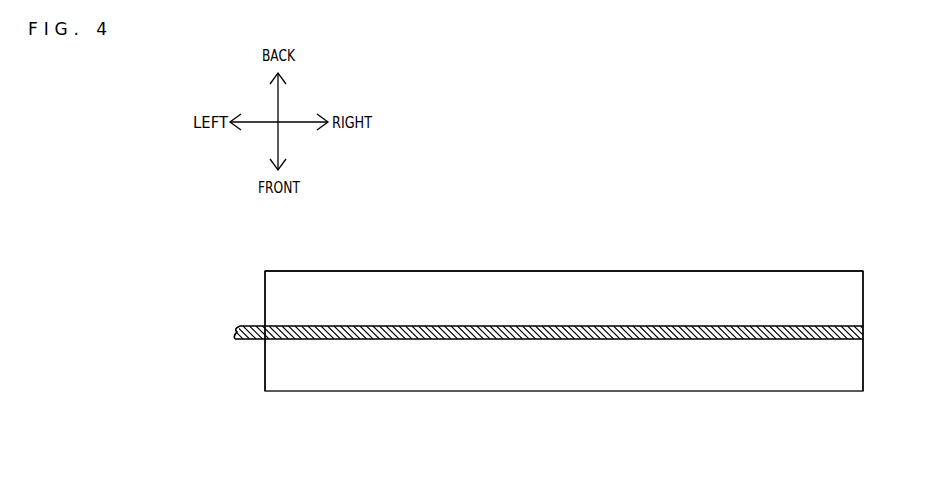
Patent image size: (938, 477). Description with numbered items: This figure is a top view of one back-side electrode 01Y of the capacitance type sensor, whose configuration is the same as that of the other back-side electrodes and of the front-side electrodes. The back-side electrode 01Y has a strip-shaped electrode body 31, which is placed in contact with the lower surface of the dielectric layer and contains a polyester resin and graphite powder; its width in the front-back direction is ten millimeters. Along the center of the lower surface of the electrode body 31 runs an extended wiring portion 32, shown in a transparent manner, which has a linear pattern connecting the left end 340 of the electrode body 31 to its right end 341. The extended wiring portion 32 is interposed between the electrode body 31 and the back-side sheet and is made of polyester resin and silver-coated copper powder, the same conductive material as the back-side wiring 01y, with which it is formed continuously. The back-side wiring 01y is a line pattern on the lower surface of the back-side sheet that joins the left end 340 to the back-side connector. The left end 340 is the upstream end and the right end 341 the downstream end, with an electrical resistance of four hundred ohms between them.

The electrode body 31 is at (554, 300).
The extended wiring portion 32 is at (495, 330).
The left end 340 is at (265, 294).
The right end 341 is at (863, 360).
The back-side wiring 01y is at (248, 340).
The back-side electrode 01Y is at (744, 271).